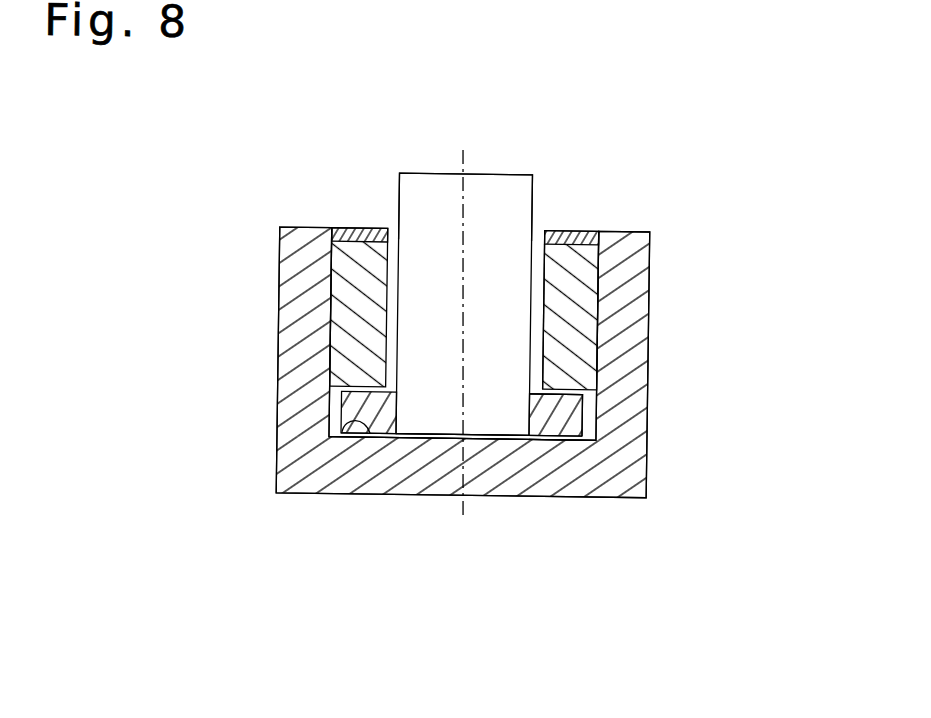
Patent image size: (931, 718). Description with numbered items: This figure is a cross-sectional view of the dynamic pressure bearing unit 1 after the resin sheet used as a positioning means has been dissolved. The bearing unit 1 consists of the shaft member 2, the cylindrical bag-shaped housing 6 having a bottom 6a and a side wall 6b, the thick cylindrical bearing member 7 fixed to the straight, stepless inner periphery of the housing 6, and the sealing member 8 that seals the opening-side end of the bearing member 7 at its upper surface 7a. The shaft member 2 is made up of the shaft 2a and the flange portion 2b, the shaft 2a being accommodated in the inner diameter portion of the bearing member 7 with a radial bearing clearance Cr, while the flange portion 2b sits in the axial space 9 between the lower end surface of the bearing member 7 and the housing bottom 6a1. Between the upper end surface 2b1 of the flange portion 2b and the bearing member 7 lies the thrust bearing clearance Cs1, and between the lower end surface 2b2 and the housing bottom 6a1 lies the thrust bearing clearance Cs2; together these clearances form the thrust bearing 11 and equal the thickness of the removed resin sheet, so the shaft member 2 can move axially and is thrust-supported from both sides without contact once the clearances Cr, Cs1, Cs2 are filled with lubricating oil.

The bearing unit 1 is at (708, 462).
The shaft member 2 is at (475, 346).
The shaft 2a is at (428, 192).
The flange portion 2b is at (474, 454).
The upper end surface of the flange portion 2b1 is at (623, 345).
The lower end surface of the flange portion 2b2 is at (548, 439).
The housing 6 is at (382, 351).
The bottom of the housing 6a is at (362, 476).
The housing bottom surface 6a1 is at (293, 447).
The housing side wall 6b is at (286, 315).
The bearing member 7 is at (517, 242).
The upper surface of the bearing member 7a is at (534, 271).
The sealing member 8 is at (350, 228).
The axial space 9 is at (487, 448).
The thrust bearing 11 is at (332, 397).
The radial bearing clearance Cr is at (539, 296).
The thrust bearing clearance Cs1 is at (605, 391).
The thrust bearing clearance Cs2 is at (584, 437).